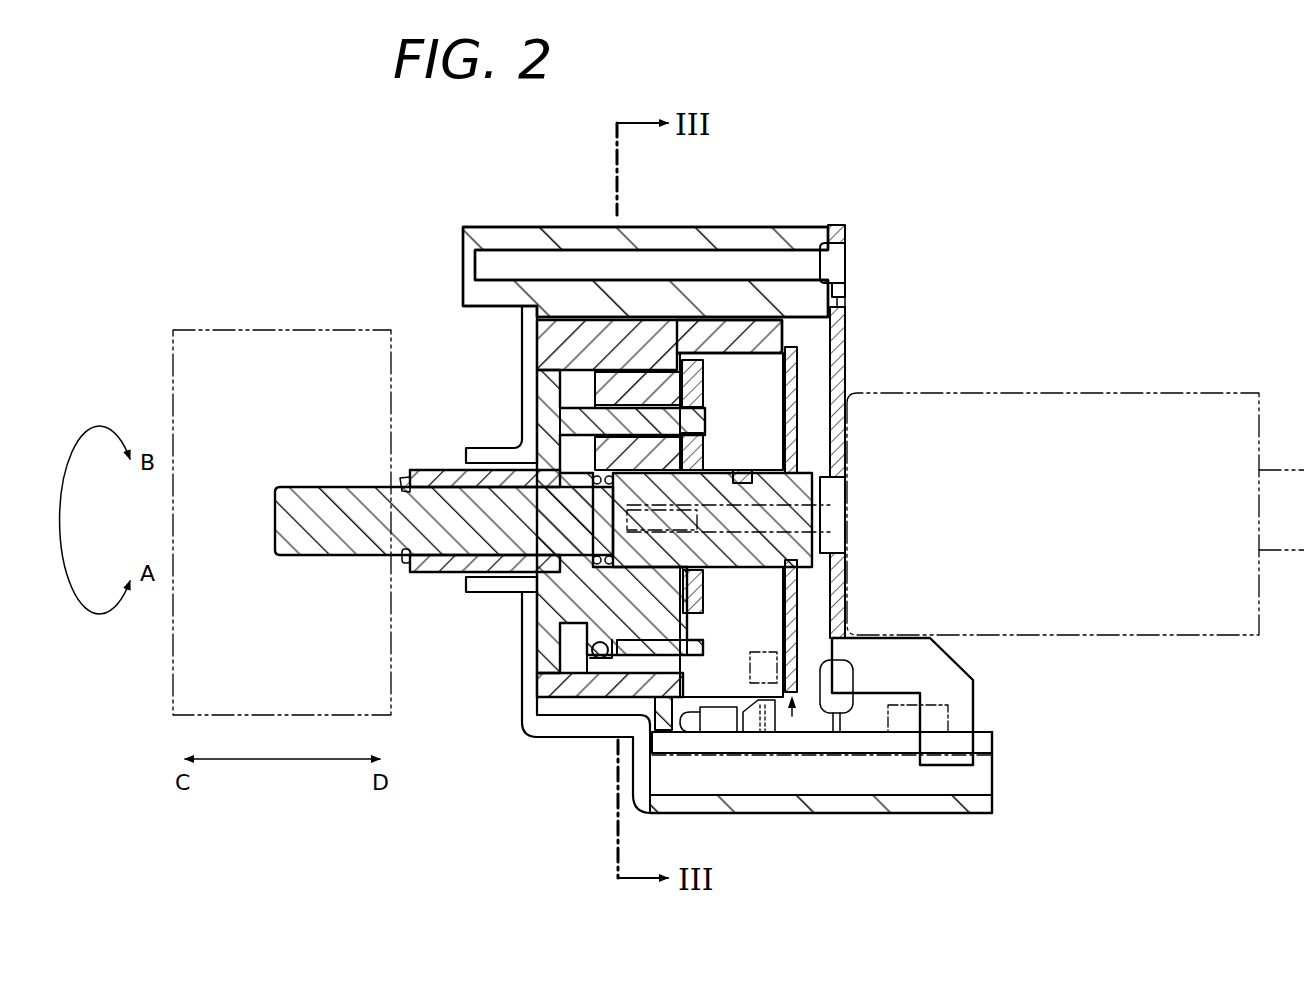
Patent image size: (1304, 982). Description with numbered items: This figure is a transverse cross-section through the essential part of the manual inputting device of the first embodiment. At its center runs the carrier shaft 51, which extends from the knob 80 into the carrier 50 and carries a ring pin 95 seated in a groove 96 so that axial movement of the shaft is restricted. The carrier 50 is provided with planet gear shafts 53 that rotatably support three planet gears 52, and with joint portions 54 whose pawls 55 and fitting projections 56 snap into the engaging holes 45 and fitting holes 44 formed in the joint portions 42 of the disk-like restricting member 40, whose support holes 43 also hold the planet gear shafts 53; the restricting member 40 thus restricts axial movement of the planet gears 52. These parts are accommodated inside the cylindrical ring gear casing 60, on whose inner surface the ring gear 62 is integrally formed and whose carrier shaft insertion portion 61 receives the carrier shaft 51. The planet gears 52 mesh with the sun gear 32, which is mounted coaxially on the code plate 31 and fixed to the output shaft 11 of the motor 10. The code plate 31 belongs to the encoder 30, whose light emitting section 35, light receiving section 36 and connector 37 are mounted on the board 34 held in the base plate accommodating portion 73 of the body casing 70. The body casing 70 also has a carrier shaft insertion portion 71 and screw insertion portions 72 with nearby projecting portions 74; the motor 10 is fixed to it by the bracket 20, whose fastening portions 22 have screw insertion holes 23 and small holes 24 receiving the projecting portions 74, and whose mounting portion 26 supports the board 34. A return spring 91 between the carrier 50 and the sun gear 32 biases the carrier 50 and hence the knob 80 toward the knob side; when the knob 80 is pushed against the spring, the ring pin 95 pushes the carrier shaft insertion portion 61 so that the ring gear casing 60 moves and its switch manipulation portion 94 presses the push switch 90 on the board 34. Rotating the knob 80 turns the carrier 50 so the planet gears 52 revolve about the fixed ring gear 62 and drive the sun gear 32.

The motor 10 is at (1200, 393).
The output shaft 11 is at (797, 476).
The bracket 20 is at (845, 332).
The fastening portions 22 is at (845, 227).
The screw insertion holes 23 is at (845, 248).
The small holes 24 is at (845, 286).
The mounting portion 26 is at (975, 700).
The encoder 30 is at (792, 720).
The code plate 31 is at (797, 372).
The sun gear 32 is at (745, 470).
The board 34 is at (992, 745).
The light emitting section 35 is at (835, 715).
The light receiving section 36 is at (770, 740).
The connector 37 is at (900, 735).
The restricting member 40 is at (703, 372).
The joint portions 42 is at (535, 722).
The support holes 43 is at (705, 410).
The fitting holes 44 is at (705, 600).
The engaging holes 45 is at (615, 680).
The carrier 50 is at (537, 380).
The carrier shaft 51 is at (330, 487).
The planet gears 52 is at (612, 362).
The planet gear shafts 53 is at (705, 422).
The joint portions 54 is at (597, 650).
The pawls 55 is at (590, 663).
The fitting projections 56 is at (703, 650).
The ring gear casing 60 is at (650, 330).
The carrier shaft insertion portion 61 is at (425, 572).
The ring gear 62 is at (673, 362).
The body casing 70 is at (718, 227).
The carrier shaft insertion portion 71 is at (490, 448).
The screw insertion portions 72 is at (475, 227).
The base plate accommodating portion 73 is at (958, 813).
The projecting portions 74 is at (845, 301).
The knob 80 is at (240, 330).
The push switch 90 is at (720, 732).
The return spring 91 is at (500, 592).
The switch manipulation portion 94 is at (657, 735).
The ring pin 95 is at (405, 478).
The groove 96 is at (412, 485).